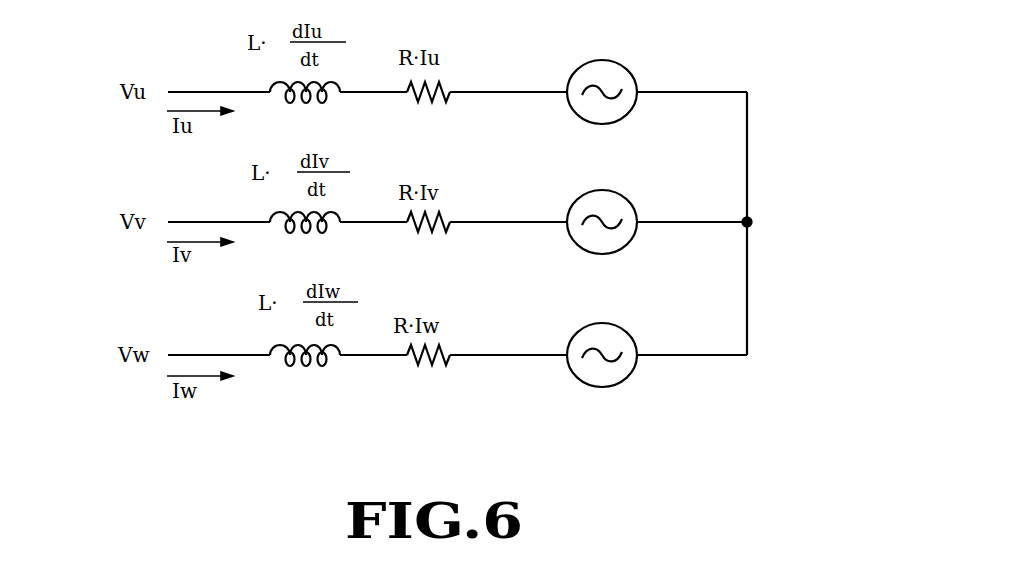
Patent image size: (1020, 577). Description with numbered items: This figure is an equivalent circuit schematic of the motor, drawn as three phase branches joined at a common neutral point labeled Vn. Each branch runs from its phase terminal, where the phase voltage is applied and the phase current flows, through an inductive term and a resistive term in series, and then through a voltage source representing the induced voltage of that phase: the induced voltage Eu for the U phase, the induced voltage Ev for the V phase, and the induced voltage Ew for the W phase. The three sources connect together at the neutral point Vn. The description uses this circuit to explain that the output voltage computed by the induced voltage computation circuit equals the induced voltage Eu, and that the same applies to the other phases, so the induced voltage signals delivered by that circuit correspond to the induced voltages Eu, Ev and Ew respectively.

The induced voltage Eu is at (617, 84).
The induced voltage Ev is at (614, 213).
The induced voltage Ew is at (619, 350).
The neutral point voltage Vn is at (769, 223).